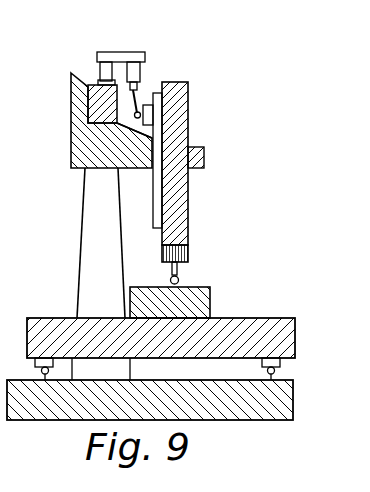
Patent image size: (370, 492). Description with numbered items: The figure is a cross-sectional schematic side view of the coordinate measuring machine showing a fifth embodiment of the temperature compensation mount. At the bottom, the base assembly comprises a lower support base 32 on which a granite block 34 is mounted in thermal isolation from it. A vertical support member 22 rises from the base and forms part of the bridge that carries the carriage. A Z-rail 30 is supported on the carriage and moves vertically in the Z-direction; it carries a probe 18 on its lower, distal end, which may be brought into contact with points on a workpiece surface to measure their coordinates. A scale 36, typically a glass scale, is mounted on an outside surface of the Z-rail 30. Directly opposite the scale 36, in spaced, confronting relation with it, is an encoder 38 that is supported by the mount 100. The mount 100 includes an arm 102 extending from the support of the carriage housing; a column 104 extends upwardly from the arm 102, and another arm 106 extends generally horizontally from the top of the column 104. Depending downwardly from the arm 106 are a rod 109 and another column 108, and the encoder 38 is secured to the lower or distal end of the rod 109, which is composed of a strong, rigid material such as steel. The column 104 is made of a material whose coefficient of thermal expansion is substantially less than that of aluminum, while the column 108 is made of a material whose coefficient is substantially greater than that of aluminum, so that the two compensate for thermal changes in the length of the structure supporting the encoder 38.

The mount 100 is at (203, 45).
The arm 102 is at (88, 98).
The column 104 is at (99, 72).
The arm 106 is at (127, 52).
The column 108 is at (141, 88).
The rod 109 is at (143, 100).
The encoder 38 is at (150, 110).
The Z-rail 30 is at (185, 118).
The scale 36 is at (158, 195).
The probe 18 is at (178, 271).
The vertical support member 22 is at (80, 222).
The granite block 34 is at (295, 340).
The support base 32 is at (294, 400).